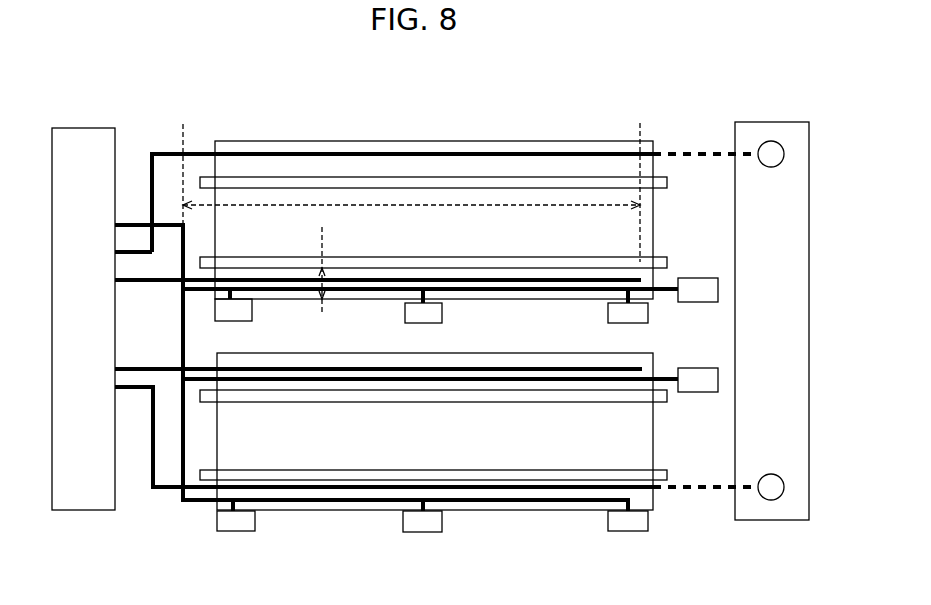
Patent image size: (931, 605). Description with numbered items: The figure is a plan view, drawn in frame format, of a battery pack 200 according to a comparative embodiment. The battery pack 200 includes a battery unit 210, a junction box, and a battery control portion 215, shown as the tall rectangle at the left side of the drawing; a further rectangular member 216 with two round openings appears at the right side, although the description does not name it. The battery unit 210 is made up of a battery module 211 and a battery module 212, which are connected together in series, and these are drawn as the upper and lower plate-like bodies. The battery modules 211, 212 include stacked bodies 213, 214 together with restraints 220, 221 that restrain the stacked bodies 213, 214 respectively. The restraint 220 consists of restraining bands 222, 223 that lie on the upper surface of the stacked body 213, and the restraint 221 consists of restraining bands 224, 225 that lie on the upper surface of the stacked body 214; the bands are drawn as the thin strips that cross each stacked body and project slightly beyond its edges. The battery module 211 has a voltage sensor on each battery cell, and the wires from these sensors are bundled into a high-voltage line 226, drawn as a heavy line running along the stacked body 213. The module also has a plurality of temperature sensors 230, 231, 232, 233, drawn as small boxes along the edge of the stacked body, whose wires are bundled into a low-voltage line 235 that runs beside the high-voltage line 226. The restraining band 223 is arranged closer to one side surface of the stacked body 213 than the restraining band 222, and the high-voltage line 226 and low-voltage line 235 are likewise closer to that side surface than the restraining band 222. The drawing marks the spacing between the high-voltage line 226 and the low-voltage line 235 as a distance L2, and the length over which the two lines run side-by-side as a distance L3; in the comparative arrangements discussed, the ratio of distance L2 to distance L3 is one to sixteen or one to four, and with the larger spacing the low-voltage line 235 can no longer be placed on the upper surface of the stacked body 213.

The battery pack 200 is at (438, 119).
The battery unit 210 is at (215, 100).
The battery module 211 is at (213, 147).
The battery module 212 is at (213, 360).
The stacked body 213 is at (520, 168).
The stacked body 214 is at (522, 443).
The battery control portion 215 is at (80, 138).
The support member 216 is at (772, 132).
The restraint 220 is at (732, 102).
The restraint 221 is at (732, 560).
The restraining band 222 is at (660, 187).
The restraining band 223 is at (667, 263).
The restraining band 224 is at (667, 396).
The restraining band 225 is at (667, 480).
The high-voltage line 226 is at (573, 283).
The temperature sensor 230 is at (703, 302).
The temperature sensor 231 is at (625, 323).
The temperature sensor 232 is at (425, 323).
The temperature sensor 233 is at (233, 321).
The low-voltage line 235 is at (518, 293).
The distance L2 is at (322, 240).
The distance L3 is at (425, 207).